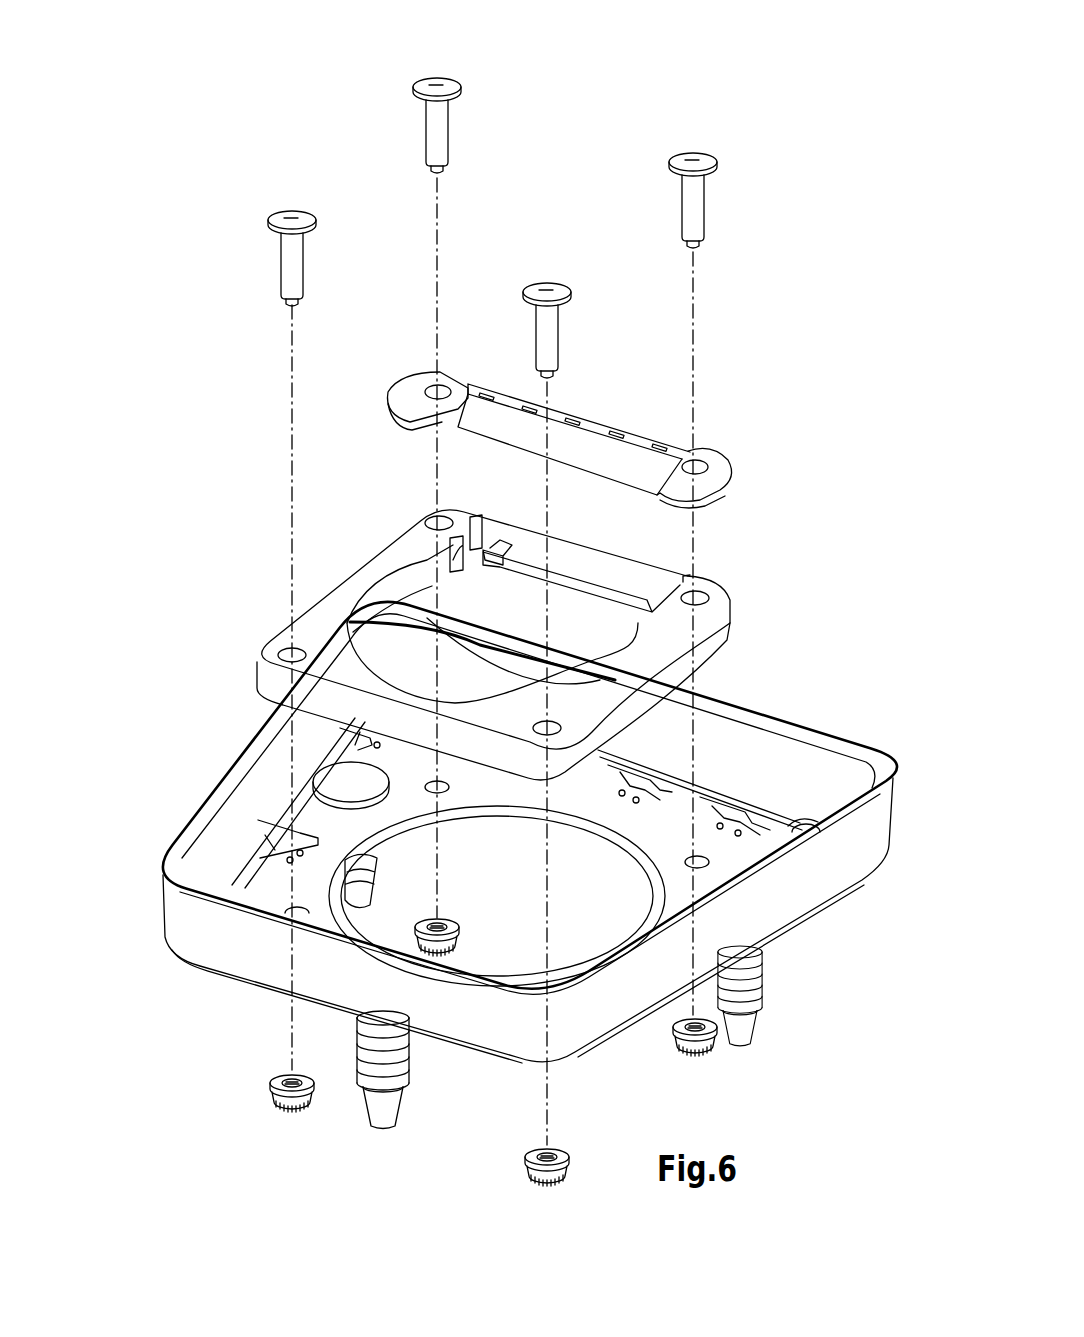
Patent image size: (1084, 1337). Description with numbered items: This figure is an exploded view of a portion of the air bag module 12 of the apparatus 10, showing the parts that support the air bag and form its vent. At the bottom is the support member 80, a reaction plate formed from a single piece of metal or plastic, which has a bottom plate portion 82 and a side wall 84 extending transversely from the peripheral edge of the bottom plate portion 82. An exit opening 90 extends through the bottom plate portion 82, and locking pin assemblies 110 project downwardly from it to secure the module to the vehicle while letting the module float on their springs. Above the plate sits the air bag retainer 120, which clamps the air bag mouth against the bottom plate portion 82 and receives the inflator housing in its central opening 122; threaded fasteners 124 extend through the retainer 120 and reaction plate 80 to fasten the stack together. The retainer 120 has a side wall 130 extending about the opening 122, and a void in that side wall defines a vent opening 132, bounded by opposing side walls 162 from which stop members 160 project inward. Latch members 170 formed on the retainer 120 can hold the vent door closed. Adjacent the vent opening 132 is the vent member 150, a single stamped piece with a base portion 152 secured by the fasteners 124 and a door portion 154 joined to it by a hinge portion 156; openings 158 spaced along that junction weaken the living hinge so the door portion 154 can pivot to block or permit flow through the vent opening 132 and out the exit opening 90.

The cooking appliance assembly 10 is at (242, 428).
The air bag module 12 is at (218, 475).
The support member 80 is at (509, 846).
The bottom plate portion 82 is at (320, 860).
The side wall 84 is at (250, 948).
The exit opening 90 is at (580, 910).
The locking pin assemblies 110 is at (418, 1077).
The air bag retainer 120 is at (450, 621).
The central opening 122 is at (395, 657).
The threaded fasteners 124 is at (292, 218).
The side wall 130 is at (305, 695).
The vent opening 132 is at (533, 548).
The vent member 150 is at (620, 425).
The base portion 152 is at (489, 376).
The door portion 154 is at (610, 455).
The hinge portion 156 is at (631, 417).
The openings 158 is at (588, 418).
The stop members 160 is at (466, 540).
The side walls 162 is at (445, 555).
The latch members 170 is at (498, 532).